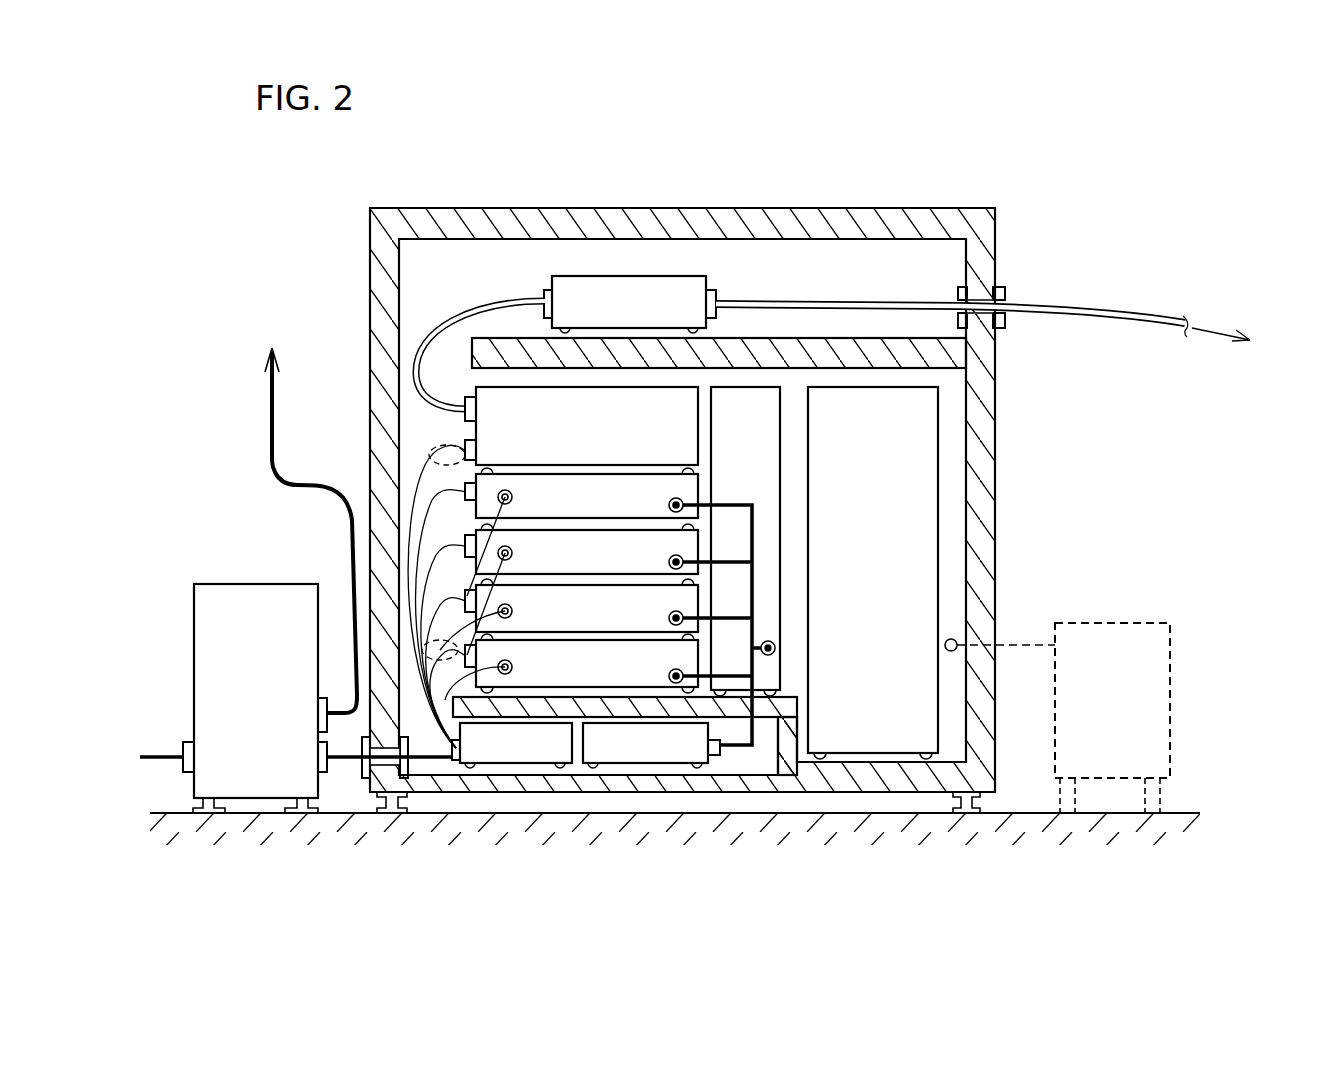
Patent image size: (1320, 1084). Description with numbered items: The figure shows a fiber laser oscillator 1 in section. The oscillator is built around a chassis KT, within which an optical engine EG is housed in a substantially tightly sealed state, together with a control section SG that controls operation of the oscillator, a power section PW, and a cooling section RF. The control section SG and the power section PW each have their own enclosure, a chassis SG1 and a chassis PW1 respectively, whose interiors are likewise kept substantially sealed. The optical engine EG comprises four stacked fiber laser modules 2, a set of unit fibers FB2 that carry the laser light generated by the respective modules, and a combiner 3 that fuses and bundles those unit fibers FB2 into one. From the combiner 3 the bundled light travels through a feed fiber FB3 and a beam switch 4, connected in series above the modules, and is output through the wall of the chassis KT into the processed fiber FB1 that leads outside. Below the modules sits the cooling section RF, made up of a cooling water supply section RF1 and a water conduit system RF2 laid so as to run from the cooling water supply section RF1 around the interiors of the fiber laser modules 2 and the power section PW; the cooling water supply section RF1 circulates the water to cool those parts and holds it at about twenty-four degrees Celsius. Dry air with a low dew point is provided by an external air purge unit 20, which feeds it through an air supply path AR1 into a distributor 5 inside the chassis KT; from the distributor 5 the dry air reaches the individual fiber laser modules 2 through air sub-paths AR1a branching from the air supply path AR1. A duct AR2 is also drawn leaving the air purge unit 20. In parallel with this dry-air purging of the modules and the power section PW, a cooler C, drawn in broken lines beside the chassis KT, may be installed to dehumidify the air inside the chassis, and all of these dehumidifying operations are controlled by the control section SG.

The fiber laser oscillator 1 is at (783, 177).
The chassis KT is at (943, 218).
The fiber laser modules 2 is at (690, 553).
The combiner 3 is at (690, 412).
The beam switch 4 is at (627, 283).
The distributor 5 is at (510, 750).
The air purge unit 20 is at (240, 575).
The processed fiber FB1 is at (1122, 320).
The unit fibers FB2 is at (432, 448).
The feed fiber FB3 is at (513, 300).
The optical engine EG is at (450, 365).
The air supply path AR1 is at (355, 780).
The air sub-paths AR1a is at (435, 648).
The outlet duct AR2 is at (270, 432).
The power section PW is at (773, 473).
The chassis of the power section PW1 is at (770, 447).
The control section SG is at (930, 545).
The chassis of the control section SG1 is at (930, 508).
The cooler C is at (1110, 623).
The cooling section RF is at (722, 768).
The cooling water supply section RF1 is at (677, 750).
The water conduit system RF2 is at (766, 737).